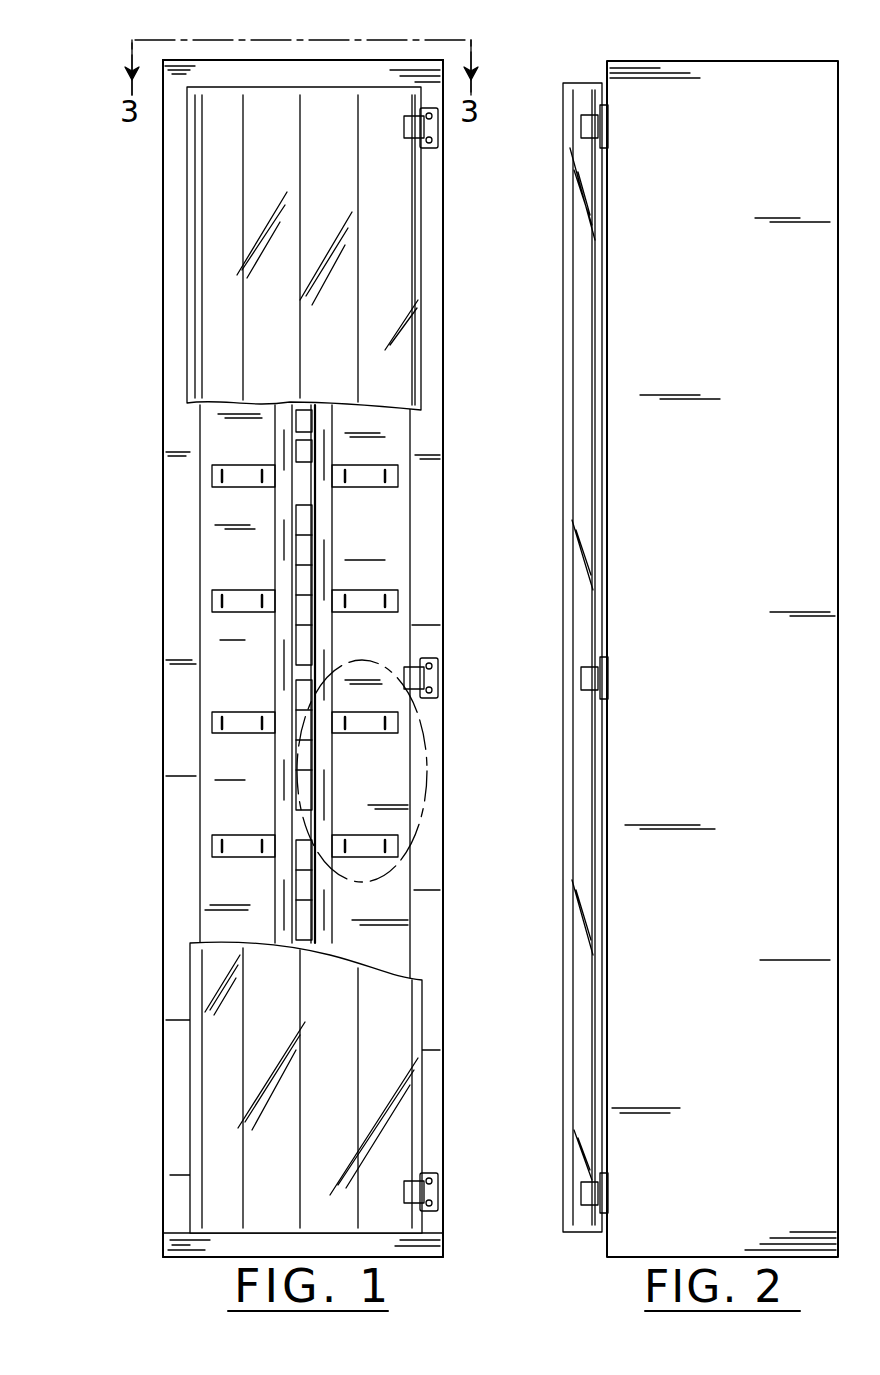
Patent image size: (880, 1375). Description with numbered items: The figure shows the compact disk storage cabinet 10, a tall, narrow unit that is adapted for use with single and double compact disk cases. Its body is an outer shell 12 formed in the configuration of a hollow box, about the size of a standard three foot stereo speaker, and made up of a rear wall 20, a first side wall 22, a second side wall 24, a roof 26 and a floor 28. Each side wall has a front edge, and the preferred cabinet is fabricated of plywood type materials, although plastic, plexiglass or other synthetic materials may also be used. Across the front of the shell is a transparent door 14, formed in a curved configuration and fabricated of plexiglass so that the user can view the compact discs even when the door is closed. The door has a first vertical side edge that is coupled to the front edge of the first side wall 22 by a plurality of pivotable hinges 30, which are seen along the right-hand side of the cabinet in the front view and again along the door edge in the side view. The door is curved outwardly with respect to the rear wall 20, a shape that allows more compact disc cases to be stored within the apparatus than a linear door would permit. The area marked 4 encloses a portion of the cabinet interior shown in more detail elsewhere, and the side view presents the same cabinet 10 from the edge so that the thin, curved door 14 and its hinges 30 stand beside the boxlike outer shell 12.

In FIG. 1, the detail area of FIG. 4 is at (425, 783).
In FIG. 1, the compact disk storage cabinet 10 is at (488, 75).
In FIG. 1, the outer shell 12 is at (163, 386).
In FIG. 2, the outer shell 12 is at (722, 659).
In FIG. 1, the door 14 is at (265, 280).
In FIG. 2, the door 14 is at (555, 198).
In FIG. 1, the rear wall 20 is at (225, 543).
In FIG. 1, the first side wall 22 is at (428, 516).
In FIG. 1, the second side wall 24 is at (176, 767).
In FIG. 1, the roof 26 is at (300, 60).
In FIG. 1, the floor 28 is at (386, 1248).
In FIG. 1, the pivotable hinges 30 is at (440, 672).
In FIG. 2, the pivotable hinges 30 is at (598, 678).